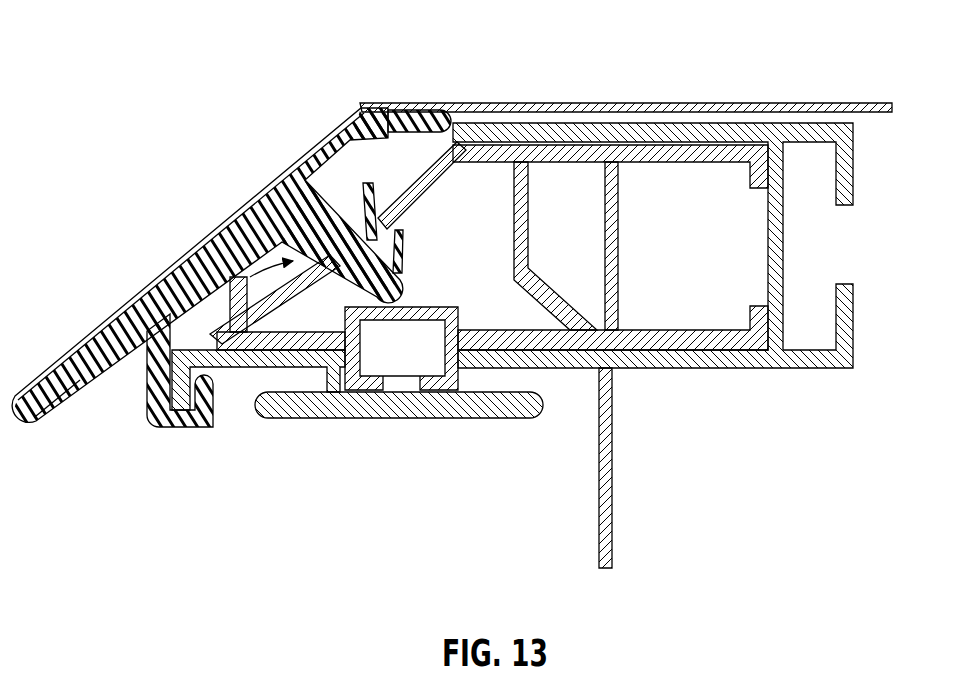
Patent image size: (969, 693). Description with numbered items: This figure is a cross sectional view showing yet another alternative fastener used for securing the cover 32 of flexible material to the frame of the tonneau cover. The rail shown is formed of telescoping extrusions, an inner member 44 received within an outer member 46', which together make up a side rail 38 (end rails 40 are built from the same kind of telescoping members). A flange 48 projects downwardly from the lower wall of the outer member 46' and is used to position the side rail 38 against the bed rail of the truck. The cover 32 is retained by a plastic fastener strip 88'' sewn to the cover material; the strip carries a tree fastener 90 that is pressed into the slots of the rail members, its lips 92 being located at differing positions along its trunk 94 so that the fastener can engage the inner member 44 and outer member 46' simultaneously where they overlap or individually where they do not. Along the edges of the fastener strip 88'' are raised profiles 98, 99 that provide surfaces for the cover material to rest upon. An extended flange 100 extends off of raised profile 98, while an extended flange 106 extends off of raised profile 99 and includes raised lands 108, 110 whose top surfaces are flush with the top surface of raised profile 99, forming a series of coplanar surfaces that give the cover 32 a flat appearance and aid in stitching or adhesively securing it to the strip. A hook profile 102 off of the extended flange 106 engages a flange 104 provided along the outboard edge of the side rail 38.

The cover 32 is at (548, 103).
The side rail 38 is at (308, 343).
The end rail 40 is at (308, 343).
The inner member 44 is at (722, 150).
The outer member 46' is at (653, 205).
The flange 48 is at (612, 395).
The fastener strip 88'' is at (241, 259).
The tree fastener 90 is at (207, 265).
The lips 92 is at (377, 190).
The trunk 94 is at (396, 243).
The raised profile 98 is at (357, 104).
The raised profile 99 is at (222, 237).
The extended flange 100 is at (425, 117).
The hook profile 102 is at (183, 427).
The flange 104 is at (180, 390).
The extended flange 106 is at (207, 265).
The raised land 108 is at (207, 265).
The raised land 110 is at (35, 387).